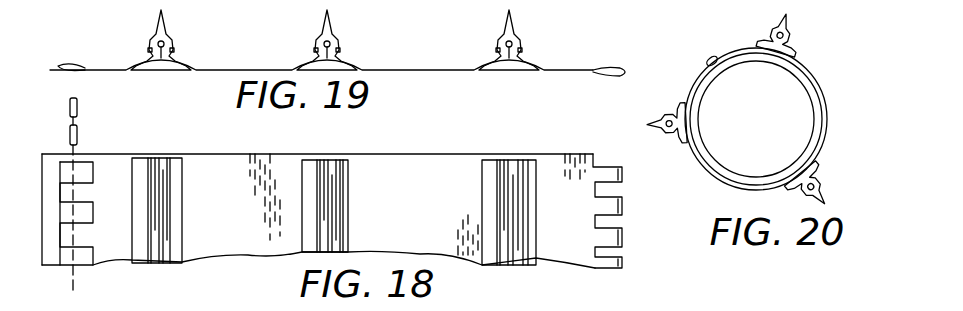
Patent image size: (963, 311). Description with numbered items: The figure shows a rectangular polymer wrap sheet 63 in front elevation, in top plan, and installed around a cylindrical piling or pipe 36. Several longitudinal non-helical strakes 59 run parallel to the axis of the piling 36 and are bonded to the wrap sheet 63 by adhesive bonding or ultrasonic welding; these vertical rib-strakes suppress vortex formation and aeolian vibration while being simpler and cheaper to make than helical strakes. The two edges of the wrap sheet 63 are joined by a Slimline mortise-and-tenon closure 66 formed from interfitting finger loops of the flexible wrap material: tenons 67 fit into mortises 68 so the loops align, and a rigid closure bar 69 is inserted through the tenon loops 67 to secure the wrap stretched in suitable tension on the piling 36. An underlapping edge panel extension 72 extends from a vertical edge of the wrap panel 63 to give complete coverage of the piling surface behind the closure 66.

In FIG. 20, the piling 36 is at (796, 78).
In FIG. 19, the longitudinal non-helical strake 59 is at (184, 37).
In FIG. 18, the longitudinal non-helical strake 59 is at (167, 215).
In FIG. 20, the longitudinal non-helical strake 59 is at (793, 36).
In FIG. 19, the rectangular wrap sheet 63 is at (417, 70).
In FIG. 18, the rectangular wrap sheet 63 is at (262, 228).
In FIG. 20, the rectangular wrap sheet 63 is at (723, 182).
In FIG. 18, the mortise-and-tenon closure 66 is at (83, 275).
In FIG. 20, the mortise-and-tenon closure 66 is at (707, 52).
In FIG. 19, the tenon 67 is at (75, 60).
In FIG. 18, the tenon 67 is at (68, 163).
In FIG. 18, the mortise 68 is at (618, 162).
In FIG. 18, the rigid closure bar 69 is at (78, 133).
In FIG. 19, the underlapping edge panel extension 72 is at (55, 70).
In FIG. 18, the underlapping edge panel extension 72 is at (52, 237).